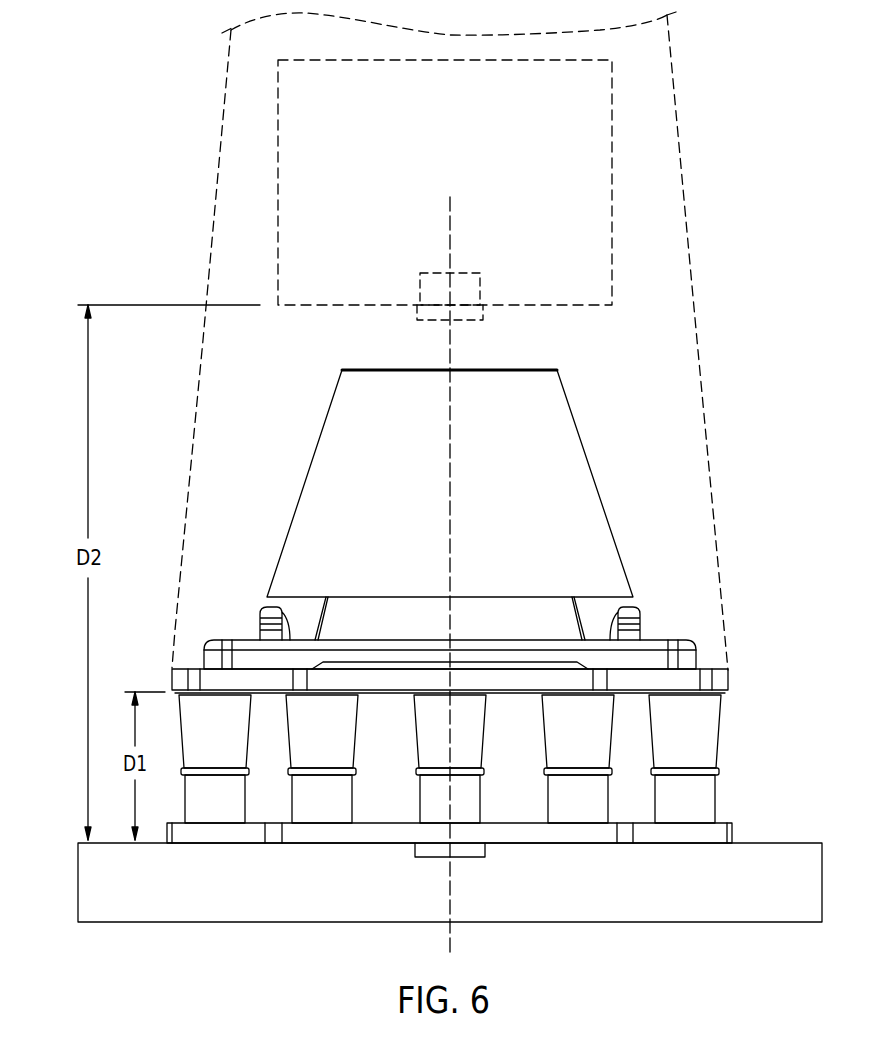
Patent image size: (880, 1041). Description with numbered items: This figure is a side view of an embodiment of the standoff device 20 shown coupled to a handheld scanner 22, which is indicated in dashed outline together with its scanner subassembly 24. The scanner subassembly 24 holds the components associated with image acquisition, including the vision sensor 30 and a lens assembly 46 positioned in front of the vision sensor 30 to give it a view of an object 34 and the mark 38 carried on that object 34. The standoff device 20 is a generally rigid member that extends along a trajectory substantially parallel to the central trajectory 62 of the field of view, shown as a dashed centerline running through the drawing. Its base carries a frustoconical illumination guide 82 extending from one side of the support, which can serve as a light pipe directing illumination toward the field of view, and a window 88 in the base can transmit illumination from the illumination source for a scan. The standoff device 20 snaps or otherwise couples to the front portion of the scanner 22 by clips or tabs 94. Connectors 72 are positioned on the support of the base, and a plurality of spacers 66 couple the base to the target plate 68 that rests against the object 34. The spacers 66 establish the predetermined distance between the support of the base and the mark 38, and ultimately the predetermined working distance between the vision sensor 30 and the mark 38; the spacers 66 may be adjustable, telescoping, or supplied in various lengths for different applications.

The standoff device 20 is at (766, 226).
The handheld scanner 22 is at (673, 72).
The scanner subassembly 24 is at (612, 170).
The vision sensor 30 is at (438, 273).
The object 34 is at (670, 922).
The mark 38 is at (432, 860).
The lens assembly 46 is at (426, 321).
The central trajectory 62 is at (451, 541).
The spacers 66 is at (713, 798).
The target plate 68 is at (733, 833).
The connectors 72 is at (722, 732).
The illumination guide 82 is at (597, 483).
The window 88 is at (543, 622).
The clips or tabs 94 is at (640, 625).